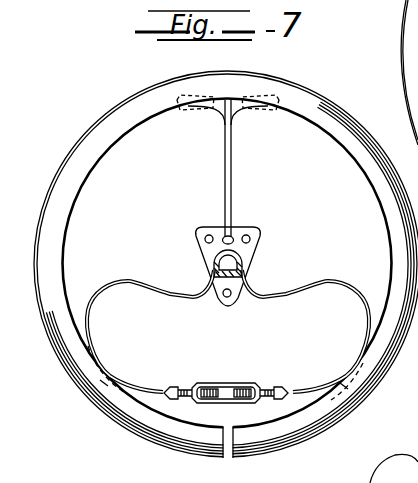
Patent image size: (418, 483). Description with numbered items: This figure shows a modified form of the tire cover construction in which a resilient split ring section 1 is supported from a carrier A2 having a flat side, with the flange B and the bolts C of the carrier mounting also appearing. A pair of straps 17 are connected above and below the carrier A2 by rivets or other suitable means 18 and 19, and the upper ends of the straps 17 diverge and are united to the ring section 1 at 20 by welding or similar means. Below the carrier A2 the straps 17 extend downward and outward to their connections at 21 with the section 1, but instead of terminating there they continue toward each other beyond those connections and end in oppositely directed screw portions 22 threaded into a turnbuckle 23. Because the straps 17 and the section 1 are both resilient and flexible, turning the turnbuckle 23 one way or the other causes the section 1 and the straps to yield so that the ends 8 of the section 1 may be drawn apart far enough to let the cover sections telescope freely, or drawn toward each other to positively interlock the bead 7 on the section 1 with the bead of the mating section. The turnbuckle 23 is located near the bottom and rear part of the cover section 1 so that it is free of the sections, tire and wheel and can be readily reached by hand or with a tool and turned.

The bead 7 is at (82, 137).
The ring section 1 is at (79, 210).
The ends of the ring section 8 is at (247, 429).
The connection of strap upper ends to ring section 20 is at (183, 110).
The rivets 18 is at (233, 237).
The bolts C is at (207, 237).
The straps 17 is at (143, 262).
The rivets 19 is at (244, 275).
The flange B is at (259, 263).
The carrier A2 is at (214, 270).
The turnbuckle 23 is at (240, 373).
The screw portions 22 is at (199, 372).
The connections of straps with the ring section 21 is at (95, 383).